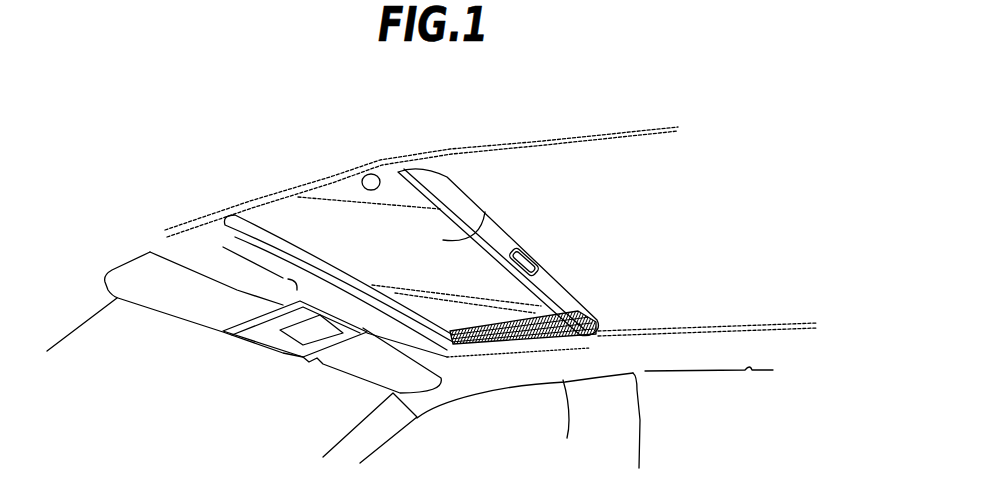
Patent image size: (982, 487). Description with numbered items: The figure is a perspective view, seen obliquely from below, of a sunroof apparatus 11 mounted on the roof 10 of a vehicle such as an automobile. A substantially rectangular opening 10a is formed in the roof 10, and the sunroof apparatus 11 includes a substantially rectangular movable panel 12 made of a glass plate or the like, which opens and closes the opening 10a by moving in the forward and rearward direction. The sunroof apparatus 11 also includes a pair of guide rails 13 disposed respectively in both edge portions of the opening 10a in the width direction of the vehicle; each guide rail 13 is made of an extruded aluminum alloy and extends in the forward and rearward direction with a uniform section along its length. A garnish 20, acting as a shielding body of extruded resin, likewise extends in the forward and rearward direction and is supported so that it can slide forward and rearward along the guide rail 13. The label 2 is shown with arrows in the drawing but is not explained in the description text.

The sunroof apparatus 2 is at (491, 301).
The roof 10 is at (749, 368).
The opening 10a is at (370, 174).
The sunroof apparatus 11 is at (564, 351).
The movable panel 12 is at (485, 212).
The guide rail 13 is at (543, 144).
The garnish 20 is at (484, 322).